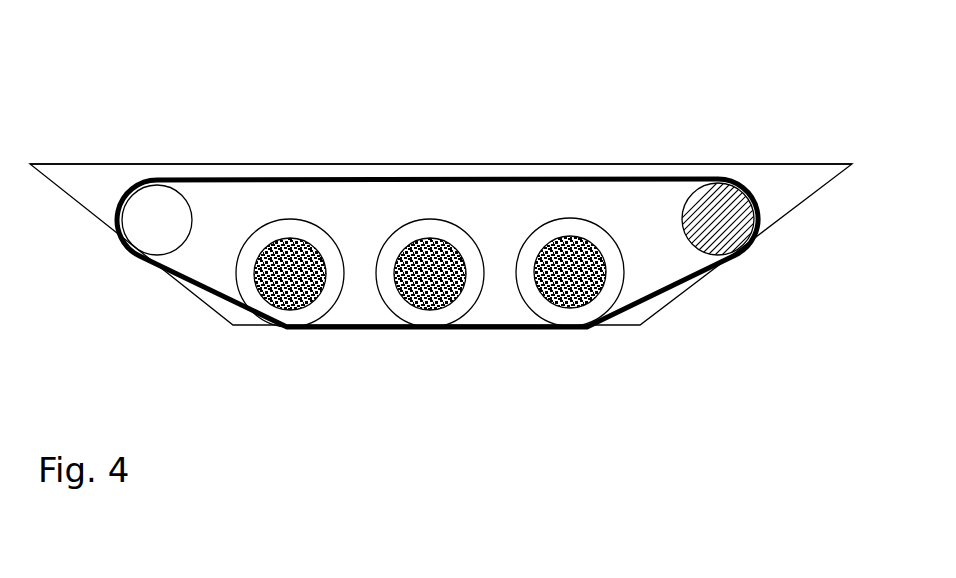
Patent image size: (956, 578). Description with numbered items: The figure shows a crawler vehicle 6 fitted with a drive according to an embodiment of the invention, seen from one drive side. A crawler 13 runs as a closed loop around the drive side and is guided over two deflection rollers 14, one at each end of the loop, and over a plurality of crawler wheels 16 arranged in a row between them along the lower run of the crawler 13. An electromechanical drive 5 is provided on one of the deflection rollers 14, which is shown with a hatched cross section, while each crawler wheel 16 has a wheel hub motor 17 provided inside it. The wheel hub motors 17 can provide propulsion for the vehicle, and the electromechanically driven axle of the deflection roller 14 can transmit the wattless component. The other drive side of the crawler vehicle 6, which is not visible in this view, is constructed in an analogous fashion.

The electromechanical drive 5 is at (700, 172).
The crawler vehicle 6 is at (827, 163).
The crawler 13 is at (374, 172).
The deflection roller 14 is at (150, 210).
The crawler wheel 16 is at (252, 295).
The wheel hub motor 17 is at (290, 278).